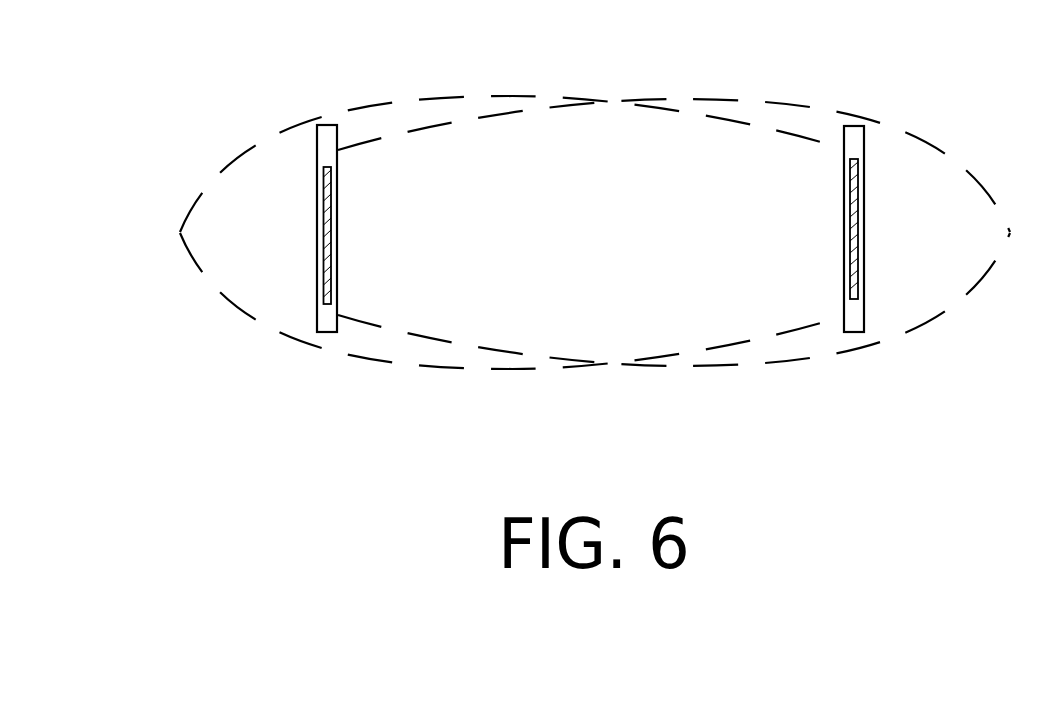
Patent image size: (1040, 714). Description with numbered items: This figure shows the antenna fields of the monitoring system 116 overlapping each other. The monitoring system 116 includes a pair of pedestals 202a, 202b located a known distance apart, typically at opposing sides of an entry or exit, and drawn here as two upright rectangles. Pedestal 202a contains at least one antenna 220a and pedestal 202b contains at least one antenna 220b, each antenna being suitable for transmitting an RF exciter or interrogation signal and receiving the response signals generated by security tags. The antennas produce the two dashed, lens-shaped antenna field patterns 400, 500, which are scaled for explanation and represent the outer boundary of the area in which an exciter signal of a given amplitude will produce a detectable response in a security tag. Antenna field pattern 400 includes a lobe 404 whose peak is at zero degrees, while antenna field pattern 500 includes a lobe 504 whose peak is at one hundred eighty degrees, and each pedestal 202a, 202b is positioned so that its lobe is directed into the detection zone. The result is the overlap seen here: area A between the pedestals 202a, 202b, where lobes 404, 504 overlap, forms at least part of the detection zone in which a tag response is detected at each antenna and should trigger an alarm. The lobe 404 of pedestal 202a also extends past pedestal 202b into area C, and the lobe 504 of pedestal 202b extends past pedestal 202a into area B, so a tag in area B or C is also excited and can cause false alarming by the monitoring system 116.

The monitoring system 116 is at (226, 76).
The pedestal 202a is at (339, 158).
The antenna 220a is at (332, 229).
The pedestal 202b is at (844, 240).
The antenna 220b is at (852, 229).
The antenna field pattern 400 is at (394, 308).
The lobe 404 is at (830, 355).
The antenna field pattern 500 is at (745, 320).
The lobe 504 is at (353, 355).